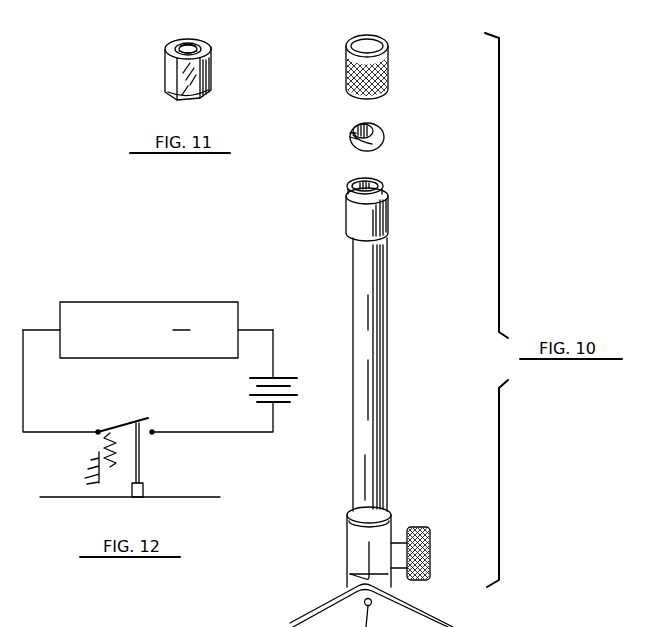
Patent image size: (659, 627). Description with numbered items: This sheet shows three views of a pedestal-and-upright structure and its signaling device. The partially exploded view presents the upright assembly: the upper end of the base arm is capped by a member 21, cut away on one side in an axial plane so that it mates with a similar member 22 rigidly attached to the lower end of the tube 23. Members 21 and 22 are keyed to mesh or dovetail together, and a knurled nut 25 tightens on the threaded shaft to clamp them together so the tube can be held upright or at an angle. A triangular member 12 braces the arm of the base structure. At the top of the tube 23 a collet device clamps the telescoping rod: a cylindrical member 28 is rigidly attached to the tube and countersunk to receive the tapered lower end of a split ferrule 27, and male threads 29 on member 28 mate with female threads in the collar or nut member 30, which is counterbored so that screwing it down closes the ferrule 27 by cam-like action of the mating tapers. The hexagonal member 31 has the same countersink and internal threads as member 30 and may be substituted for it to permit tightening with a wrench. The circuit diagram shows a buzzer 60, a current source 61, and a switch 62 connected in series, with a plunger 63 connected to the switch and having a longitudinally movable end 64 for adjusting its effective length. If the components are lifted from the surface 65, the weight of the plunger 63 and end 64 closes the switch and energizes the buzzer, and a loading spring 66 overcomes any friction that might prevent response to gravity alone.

In FIG. 10, the triangular member 12 is at (452, 626).
In FIG. 10, the capping member 21 is at (382, 567).
In FIG. 10, the mating member 22 is at (357, 547).
In FIG. 10, the tube 23 is at (372, 476).
In FIG. 10, the knurled nut 25 is at (426, 548).
In FIG. 10, the split ferrule 27 is at (384, 132).
In FIG. 10, the cylindrical member 28 is at (390, 206).
In FIG. 10, the male threads 29 is at (383, 184).
In FIG. 10, the collar or nut member 30 is at (390, 62).
In FIG. 11, the hexagonal member 31 is at (211, 63).
In FIG. 12, the buzzer 60 is at (135, 302).
In FIG. 12, the current source 61 is at (280, 376).
In FIG. 12, the switch 62 is at (116, 426).
In FIG. 12, the plunger 63 is at (142, 458).
In FIG. 12, the longitudinally movable end 64 is at (145, 487).
In FIG. 12, the surface 65 is at (200, 497).
In FIG. 12, the loading spring 66 is at (100, 450).